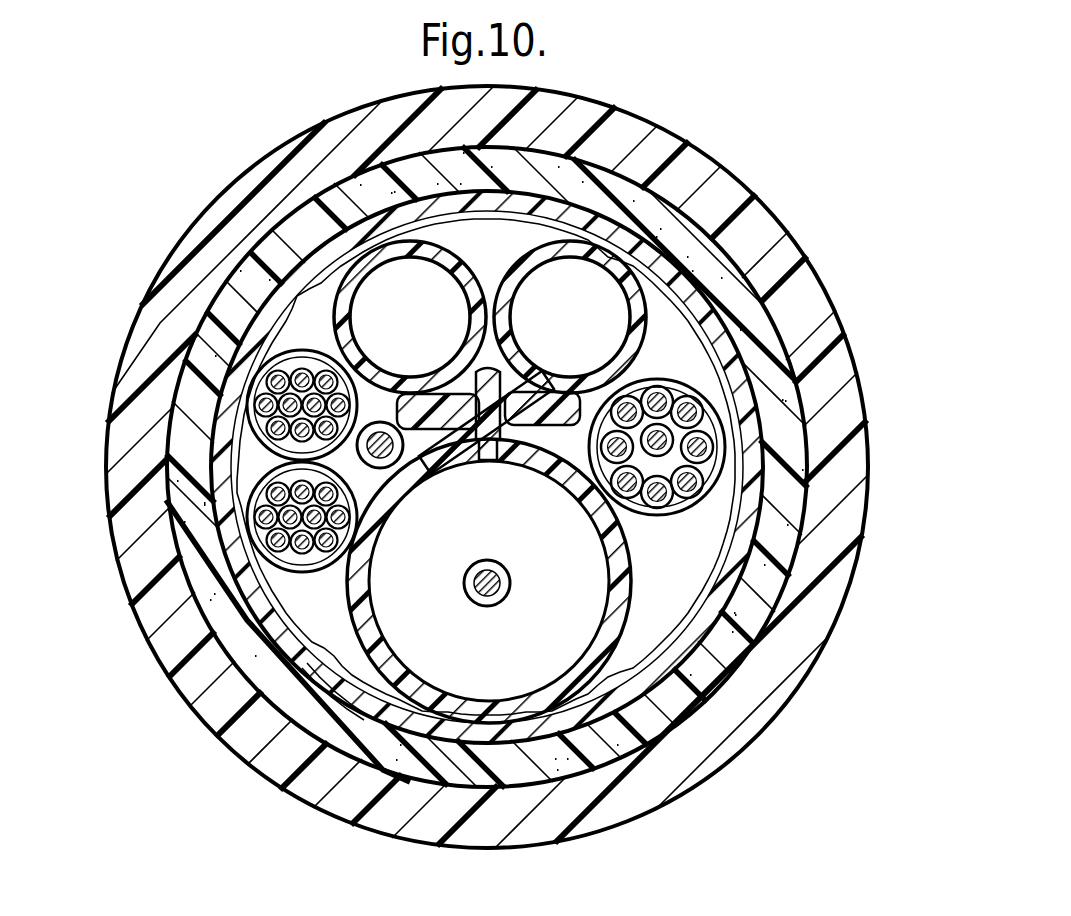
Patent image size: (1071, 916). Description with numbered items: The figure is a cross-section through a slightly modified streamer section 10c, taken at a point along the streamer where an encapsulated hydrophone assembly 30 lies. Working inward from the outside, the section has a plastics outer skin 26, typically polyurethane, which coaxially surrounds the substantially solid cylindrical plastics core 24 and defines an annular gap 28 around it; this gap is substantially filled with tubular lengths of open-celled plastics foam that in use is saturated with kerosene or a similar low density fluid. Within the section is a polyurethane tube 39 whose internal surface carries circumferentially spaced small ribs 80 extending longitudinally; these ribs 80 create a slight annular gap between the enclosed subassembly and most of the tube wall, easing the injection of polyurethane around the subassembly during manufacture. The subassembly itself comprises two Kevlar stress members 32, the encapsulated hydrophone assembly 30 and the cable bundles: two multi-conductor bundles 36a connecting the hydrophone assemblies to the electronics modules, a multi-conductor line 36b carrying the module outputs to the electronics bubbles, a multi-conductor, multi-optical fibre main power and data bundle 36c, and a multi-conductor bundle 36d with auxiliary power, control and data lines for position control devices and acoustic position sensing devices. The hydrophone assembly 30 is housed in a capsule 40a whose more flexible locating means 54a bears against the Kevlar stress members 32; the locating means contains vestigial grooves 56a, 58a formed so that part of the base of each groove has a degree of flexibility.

The streamer section 10c is at (690, 106).
The plastics outer skin 26 is at (837, 307).
The annular gap 28 is at (733, 287).
The cylindrical plastics core 24 is at (637, 648).
The polyurethane tube 39 is at (317, 268).
The ribs 80 is at (305, 703).
The Kevlar stress members 32 is at (423, 324).
The vestigial groove 56a is at (433, 398).
The vestigial groove 58a is at (548, 393).
The locating means 54a is at (487, 434).
The capsule 40a is at (645, 569).
The encapsulated hydrophone assembly 30 is at (497, 662).
The multi-conductor bundles 36a is at (393, 462).
The multi-conductor line 36b is at (250, 493).
The main power and data bundle 36c is at (707, 417).
The multi-conductor bundle 36d is at (250, 390).